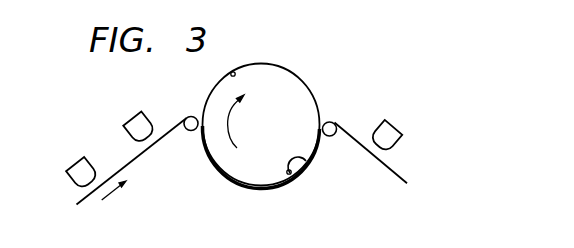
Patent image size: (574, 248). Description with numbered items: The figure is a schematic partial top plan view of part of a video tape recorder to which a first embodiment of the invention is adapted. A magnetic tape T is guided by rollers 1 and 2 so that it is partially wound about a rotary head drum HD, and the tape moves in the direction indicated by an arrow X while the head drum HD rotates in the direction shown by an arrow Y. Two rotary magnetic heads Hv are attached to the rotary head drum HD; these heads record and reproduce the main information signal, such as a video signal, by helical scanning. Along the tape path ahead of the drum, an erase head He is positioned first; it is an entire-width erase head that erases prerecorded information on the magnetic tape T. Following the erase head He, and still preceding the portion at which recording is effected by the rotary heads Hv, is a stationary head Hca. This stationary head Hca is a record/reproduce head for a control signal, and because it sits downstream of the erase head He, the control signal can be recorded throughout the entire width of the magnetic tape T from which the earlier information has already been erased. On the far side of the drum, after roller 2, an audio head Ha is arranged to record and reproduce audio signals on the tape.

The rotary head drum HD is at (297, 88).
The rotary magnetic heads Hv is at (233, 72).
The stationary head Hca is at (135, 125).
The erase head He is at (80, 175).
The audio head Ha is at (392, 135).
The magnetic tape T is at (130, 158).
The roller 1 is at (188, 132).
The roller 2 is at (336, 137).
The arrow X is at (110, 193).
The arrow Y is at (231, 131).